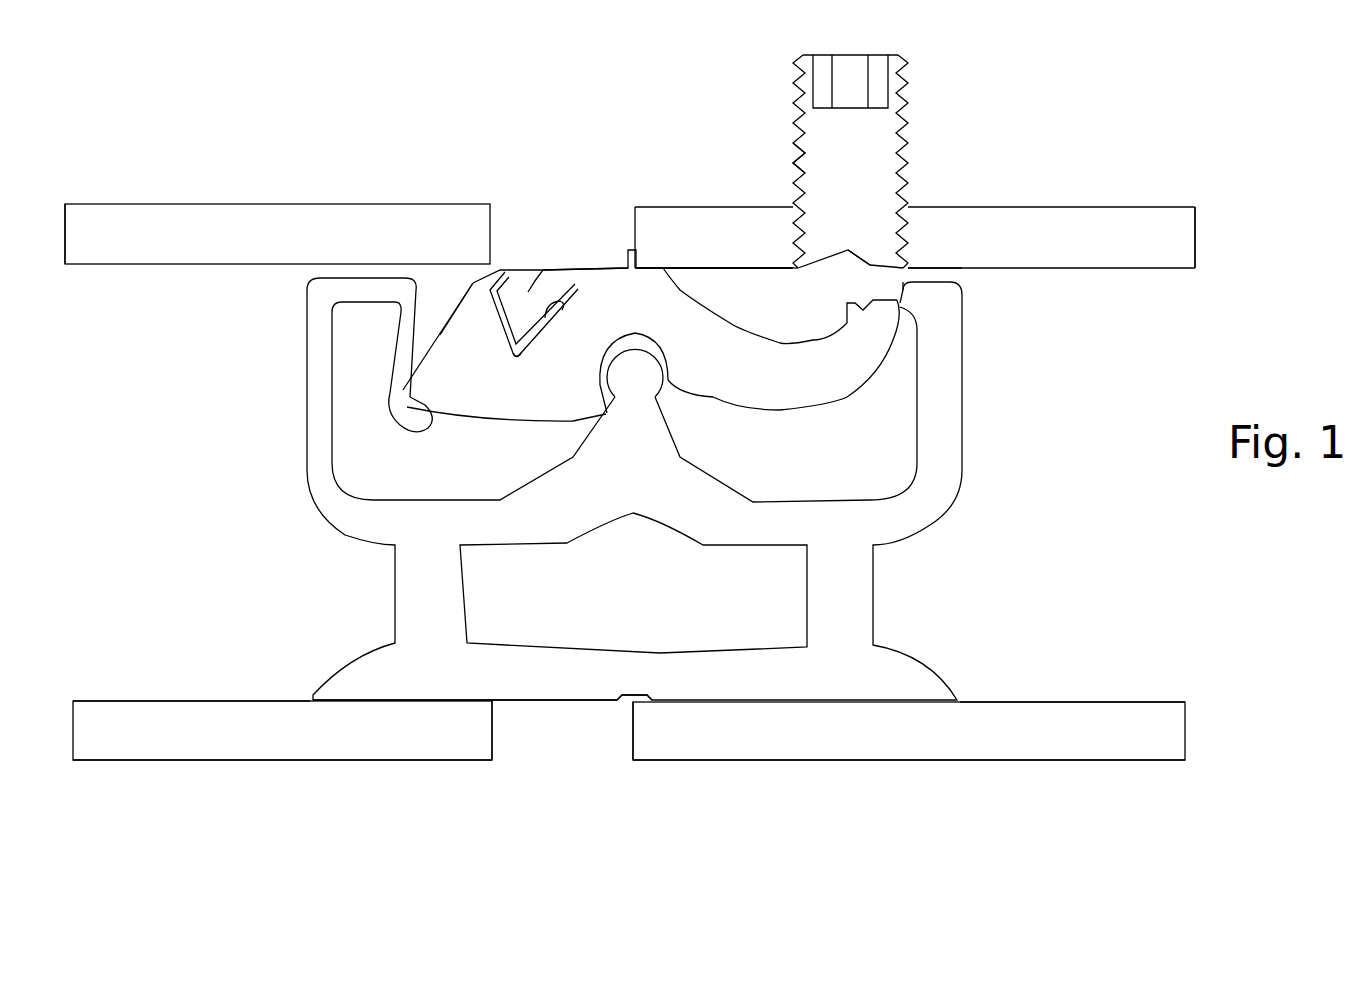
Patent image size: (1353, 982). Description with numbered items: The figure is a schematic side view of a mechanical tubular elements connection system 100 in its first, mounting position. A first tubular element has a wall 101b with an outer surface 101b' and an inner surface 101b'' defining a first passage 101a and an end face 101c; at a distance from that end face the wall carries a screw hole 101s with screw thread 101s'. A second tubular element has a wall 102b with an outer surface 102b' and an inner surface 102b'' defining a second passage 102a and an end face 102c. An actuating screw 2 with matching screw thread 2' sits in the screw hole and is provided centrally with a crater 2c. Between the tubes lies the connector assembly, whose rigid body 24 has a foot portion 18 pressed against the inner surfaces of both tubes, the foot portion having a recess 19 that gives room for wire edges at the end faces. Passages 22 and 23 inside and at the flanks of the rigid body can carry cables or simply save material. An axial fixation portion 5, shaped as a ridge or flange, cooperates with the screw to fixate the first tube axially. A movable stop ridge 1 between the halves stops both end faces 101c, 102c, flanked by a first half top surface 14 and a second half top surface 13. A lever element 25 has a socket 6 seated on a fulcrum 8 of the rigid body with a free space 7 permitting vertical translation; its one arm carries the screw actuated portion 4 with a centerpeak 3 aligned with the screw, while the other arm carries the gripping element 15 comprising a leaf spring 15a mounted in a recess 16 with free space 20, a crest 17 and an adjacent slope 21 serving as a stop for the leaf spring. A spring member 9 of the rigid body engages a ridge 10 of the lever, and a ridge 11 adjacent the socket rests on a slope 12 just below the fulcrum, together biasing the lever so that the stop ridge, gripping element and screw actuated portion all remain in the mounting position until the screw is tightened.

The movable stop ridge 1 is at (633, 255).
The actuating screw 2 is at (915, 107).
The screw thread 2' is at (778, 162).
The crater 2c is at (830, 257).
The centerpeak 3 is at (860, 290).
The screw actuated portion 4 is at (880, 372).
The axial fixation portion 5 is at (975, 320).
The socket 6 is at (627, 330).
The free space 7 is at (655, 345).
The fulcrum 8 is at (672, 400).
The spring member 9 is at (383, 365).
The ridge 10 is at (400, 405).
The ridge 11 is at (604, 408).
The slope 12 is at (602, 420).
The second half top surface 13 is at (573, 262).
The first half top surface 14 is at (680, 260).
The movable gripping element 15 is at (506, 262).
The leaf spring 15a is at (500, 312).
The recess 16 is at (525, 288).
The crest 17 is at (470, 280).
The foot portion 18 is at (527, 712).
The recess 19 is at (625, 705).
The space 20 is at (518, 362).
The slope 21 is at (481, 317).
The passage 22 is at (655, 605).
The passages 23 is at (380, 590).
The rigid body 24 is at (624, 416).
The lever element 25 is at (780, 319).
The mechanical tubular elements connection system 100 is at (575, 468).
The first passage 101a is at (1097, 505).
The wall 101b is at (1133, 226).
The outer surface 101b' is at (909, 780).
The inner surface 101b'' is at (1072, 684).
The end face 101c is at (633, 762).
The screw hole 101s is at (853, 262).
The screw thread 101s' is at (951, 252).
The second passage 102a is at (162, 437).
The wall 102b is at (150, 265).
The outer surface 102b' is at (282, 780).
The inner surface 102b'' is at (191, 682).
The end face 102c is at (505, 713).